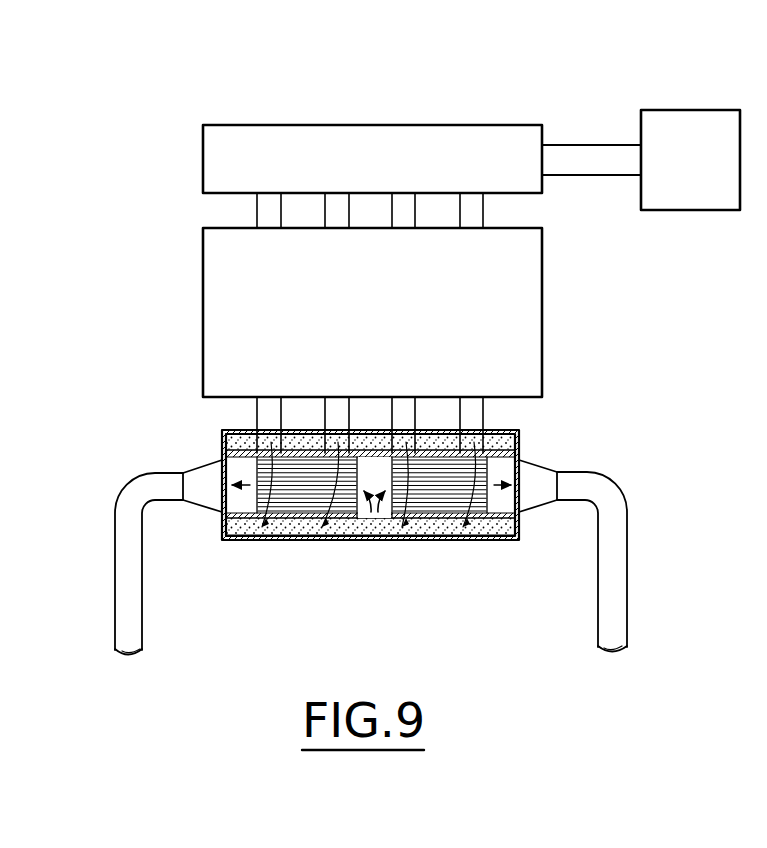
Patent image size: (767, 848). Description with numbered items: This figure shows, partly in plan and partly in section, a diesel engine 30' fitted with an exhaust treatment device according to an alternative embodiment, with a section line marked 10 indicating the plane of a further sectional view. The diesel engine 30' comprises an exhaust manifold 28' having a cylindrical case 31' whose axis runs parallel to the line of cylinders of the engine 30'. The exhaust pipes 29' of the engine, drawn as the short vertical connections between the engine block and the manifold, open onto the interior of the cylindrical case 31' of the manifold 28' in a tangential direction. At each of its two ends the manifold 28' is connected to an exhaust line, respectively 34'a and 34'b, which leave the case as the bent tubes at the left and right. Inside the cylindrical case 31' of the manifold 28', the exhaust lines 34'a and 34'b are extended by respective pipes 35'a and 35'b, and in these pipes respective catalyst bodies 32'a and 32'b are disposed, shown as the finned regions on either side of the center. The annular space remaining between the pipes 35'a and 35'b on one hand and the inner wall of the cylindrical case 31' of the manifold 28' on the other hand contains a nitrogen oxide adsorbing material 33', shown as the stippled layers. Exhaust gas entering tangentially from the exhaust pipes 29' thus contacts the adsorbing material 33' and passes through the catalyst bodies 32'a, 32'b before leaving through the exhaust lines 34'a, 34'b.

The section line for FIG. 10 is at (334, 93).
The diesel engine 30' is at (420, 312).
The exhaust pipes 29' is at (448, 378).
The exhaust manifold 28' is at (371, 510).
The pipe 35'a is at (321, 424).
The pipe 35'b is at (419, 466).
The cylindrical case 31' is at (371, 526).
The catalyst body 32'a is at (242, 477).
The catalyst body 32'b is at (502, 477).
The nitrogen oxide adsorbing material 33' is at (404, 524).
The exhaust line 34'a is at (138, 557).
The exhaust line 34'b is at (615, 556).